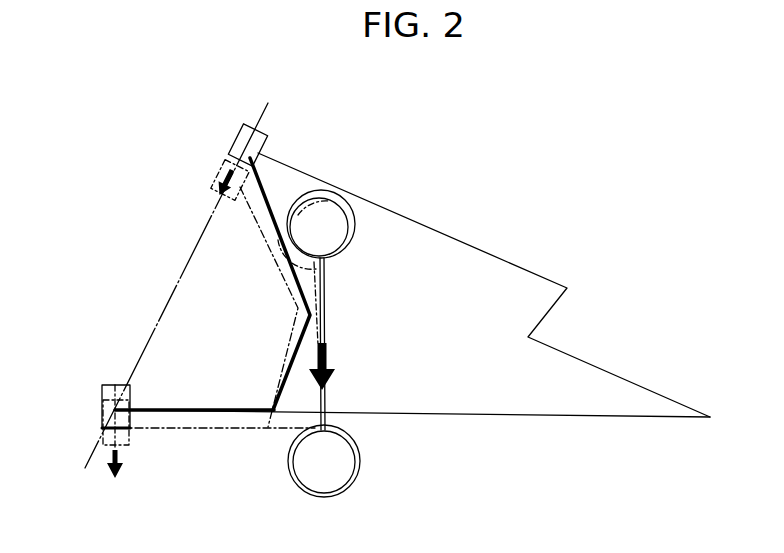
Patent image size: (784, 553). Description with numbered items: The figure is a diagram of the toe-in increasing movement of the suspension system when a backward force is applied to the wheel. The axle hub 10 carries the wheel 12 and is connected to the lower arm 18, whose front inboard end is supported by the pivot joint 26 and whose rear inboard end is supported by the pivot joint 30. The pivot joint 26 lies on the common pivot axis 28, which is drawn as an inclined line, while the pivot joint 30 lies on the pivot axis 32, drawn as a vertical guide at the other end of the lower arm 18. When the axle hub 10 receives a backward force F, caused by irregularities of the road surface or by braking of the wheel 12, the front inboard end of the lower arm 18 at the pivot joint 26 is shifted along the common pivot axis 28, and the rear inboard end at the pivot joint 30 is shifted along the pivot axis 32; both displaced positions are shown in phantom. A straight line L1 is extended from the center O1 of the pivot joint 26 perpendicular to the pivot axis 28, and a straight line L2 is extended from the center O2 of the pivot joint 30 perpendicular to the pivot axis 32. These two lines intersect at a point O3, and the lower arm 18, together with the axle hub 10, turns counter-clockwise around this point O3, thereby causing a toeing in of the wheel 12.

The axle hub 10 is at (307, 342).
The wheel 12 is at (356, 223).
The lower arm 18 is at (293, 287).
The pivot joint 26 is at (238, 153).
The common pivot axis 28 is at (190, 258).
The pivot joint 30 is at (102, 432).
The pivot axis 32 is at (115, 378).
The center of the pivot joint 26 O1 is at (262, 147).
The center of the pivot joint 30 O2 is at (120, 415).
The point of intersection O3 is at (710, 412).
The straight line L1 is at (484, 250).
The straight line L2 is at (480, 417).
The backward force F is at (337, 362).